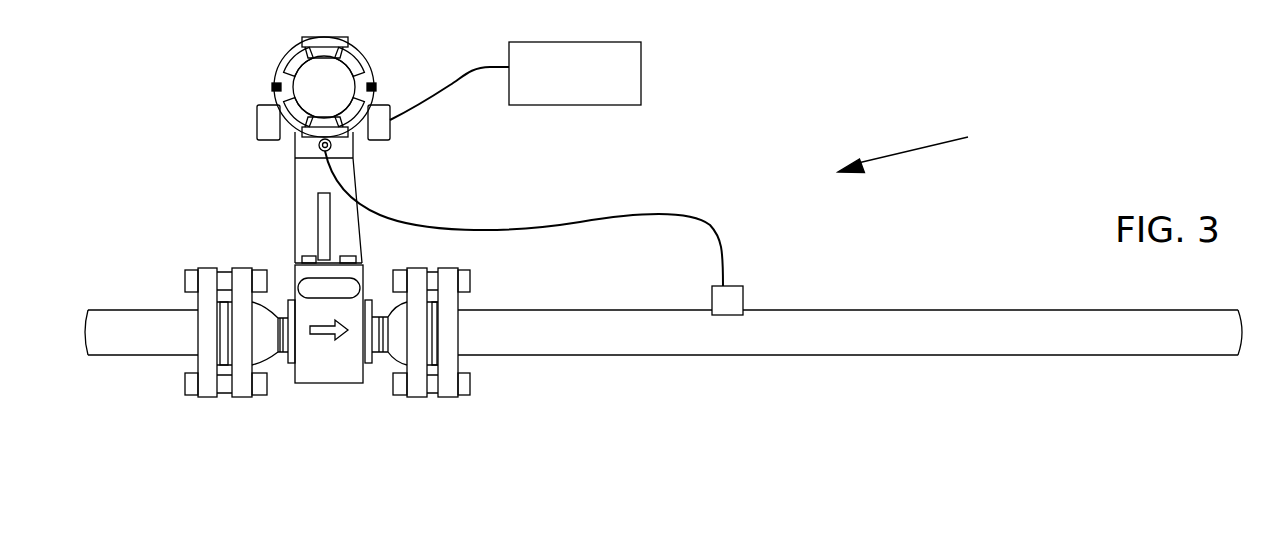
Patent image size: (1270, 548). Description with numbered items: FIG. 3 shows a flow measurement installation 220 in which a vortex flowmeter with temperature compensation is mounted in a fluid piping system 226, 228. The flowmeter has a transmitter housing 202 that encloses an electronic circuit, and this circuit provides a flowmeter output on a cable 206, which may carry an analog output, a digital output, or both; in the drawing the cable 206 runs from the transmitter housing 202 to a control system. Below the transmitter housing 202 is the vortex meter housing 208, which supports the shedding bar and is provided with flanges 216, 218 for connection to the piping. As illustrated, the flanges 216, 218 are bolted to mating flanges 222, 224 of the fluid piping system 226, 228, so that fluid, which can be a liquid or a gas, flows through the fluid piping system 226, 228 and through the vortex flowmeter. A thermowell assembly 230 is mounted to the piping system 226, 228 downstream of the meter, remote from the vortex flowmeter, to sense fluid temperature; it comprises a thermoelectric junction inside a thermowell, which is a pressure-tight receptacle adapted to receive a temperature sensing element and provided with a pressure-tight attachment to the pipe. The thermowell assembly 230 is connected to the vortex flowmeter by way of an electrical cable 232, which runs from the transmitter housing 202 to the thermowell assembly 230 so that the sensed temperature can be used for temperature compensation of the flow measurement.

The transmitter housing 202 is at (277, 73).
The cable 206 is at (422, 113).
The vortex meter housing 208 is at (327, 383).
The flange 216 is at (415, 400).
The flange 218 is at (233, 400).
The flow measurement installation 220 is at (924, 151).
The flange 222 is at (215, 341).
The flange 224 is at (450, 347).
The fluid piping system 226 is at (152, 357).
The fluid piping system 228 is at (510, 355).
The thermowell assembly 230 is at (740, 285).
The electrical cable 232 is at (540, 223).